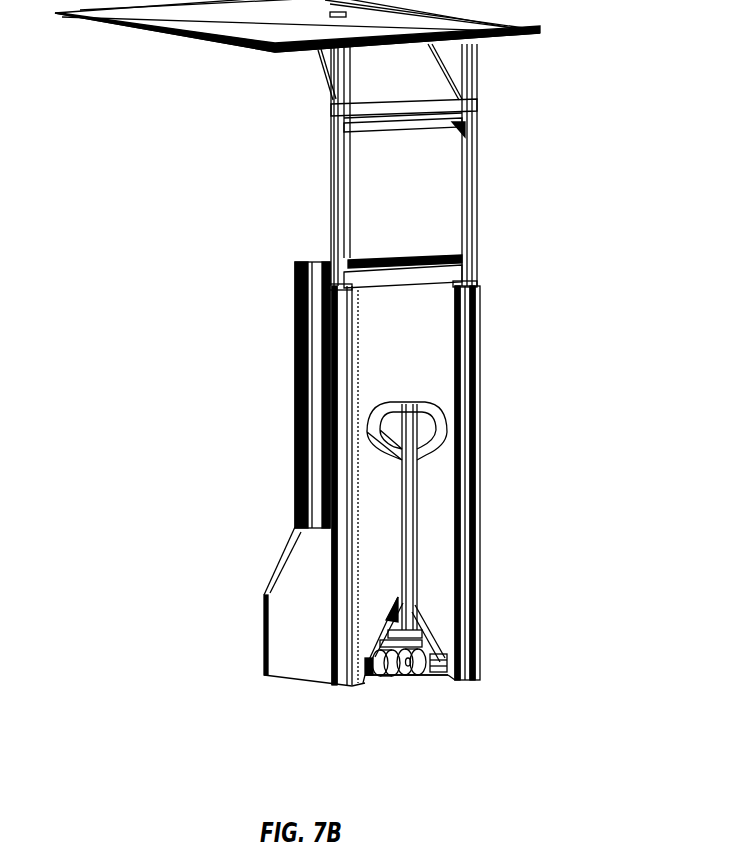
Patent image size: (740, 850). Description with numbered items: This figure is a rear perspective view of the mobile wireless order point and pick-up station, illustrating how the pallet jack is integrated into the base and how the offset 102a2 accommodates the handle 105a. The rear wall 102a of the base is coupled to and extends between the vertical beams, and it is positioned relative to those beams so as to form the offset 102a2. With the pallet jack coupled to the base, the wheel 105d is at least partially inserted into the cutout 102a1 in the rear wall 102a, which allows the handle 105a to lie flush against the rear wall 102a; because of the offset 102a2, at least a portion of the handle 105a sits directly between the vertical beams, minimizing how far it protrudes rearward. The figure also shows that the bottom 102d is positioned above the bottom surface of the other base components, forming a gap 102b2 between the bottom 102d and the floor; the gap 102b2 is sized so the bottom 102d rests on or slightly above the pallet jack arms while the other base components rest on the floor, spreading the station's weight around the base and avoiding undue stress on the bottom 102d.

The rear wall 102a is at (443, 474).
The cutout 102a1 is at (430, 637).
The offset 102a2 is at (468, 343).
The gap 102b2 is at (433, 672).
The bottom 102d is at (447, 658).
The handle 105a is at (412, 557).
The wheel 105d is at (387, 678).